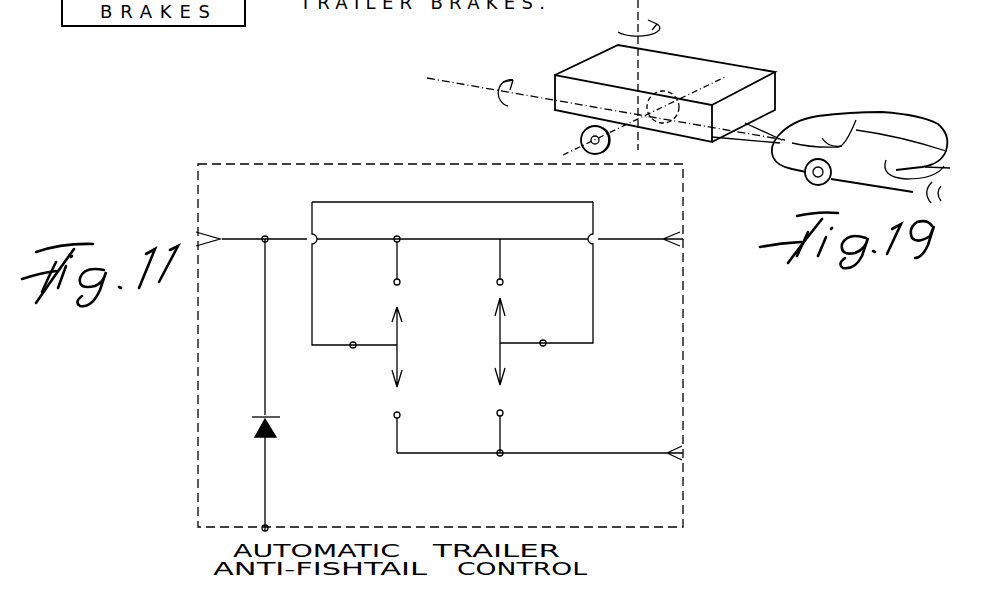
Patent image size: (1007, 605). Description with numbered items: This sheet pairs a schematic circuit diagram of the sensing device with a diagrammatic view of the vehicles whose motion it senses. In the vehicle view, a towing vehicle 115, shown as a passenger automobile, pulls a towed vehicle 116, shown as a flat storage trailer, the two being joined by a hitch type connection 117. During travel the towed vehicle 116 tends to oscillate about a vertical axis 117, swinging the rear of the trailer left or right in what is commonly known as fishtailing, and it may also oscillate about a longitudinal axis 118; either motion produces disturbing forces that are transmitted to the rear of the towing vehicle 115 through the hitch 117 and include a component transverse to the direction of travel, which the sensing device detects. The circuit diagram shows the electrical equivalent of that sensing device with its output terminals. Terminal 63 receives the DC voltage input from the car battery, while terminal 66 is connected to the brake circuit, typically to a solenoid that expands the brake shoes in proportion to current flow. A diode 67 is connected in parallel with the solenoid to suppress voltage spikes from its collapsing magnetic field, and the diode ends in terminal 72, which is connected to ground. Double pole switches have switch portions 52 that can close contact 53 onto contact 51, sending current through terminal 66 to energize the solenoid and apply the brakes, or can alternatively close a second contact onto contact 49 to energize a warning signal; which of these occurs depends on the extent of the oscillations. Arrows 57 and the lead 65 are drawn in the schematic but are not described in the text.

In FIG. 11, the contact 49 is at (405, 416).
In FIG. 11, the contact 51 is at (447, 265).
In FIG. 11, the switch portion 52 is at (393, 352).
In FIG. 11, the contact 53 is at (405, 304).
In FIG. 11, the contact 57 is at (462, 369).
In FIG. 11, the terminal 63 is at (688, 236).
In FIG. 11, the lead 65 is at (554, 451).
In FIG. 11, the terminal 66 is at (414, 235).
In FIG. 11, the diode 67 is at (283, 431).
In FIG. 11, the terminal 72 is at (262, 530).
In FIG. 19, the towing vehicle 115 is at (880, 113).
In FIG. 19, the towed vehicle 116 is at (718, 62).
In FIG. 19, the hitch type connection 117 is at (813, 63).
In FIG. 19, the longitudinal axis 118 is at (475, 90).